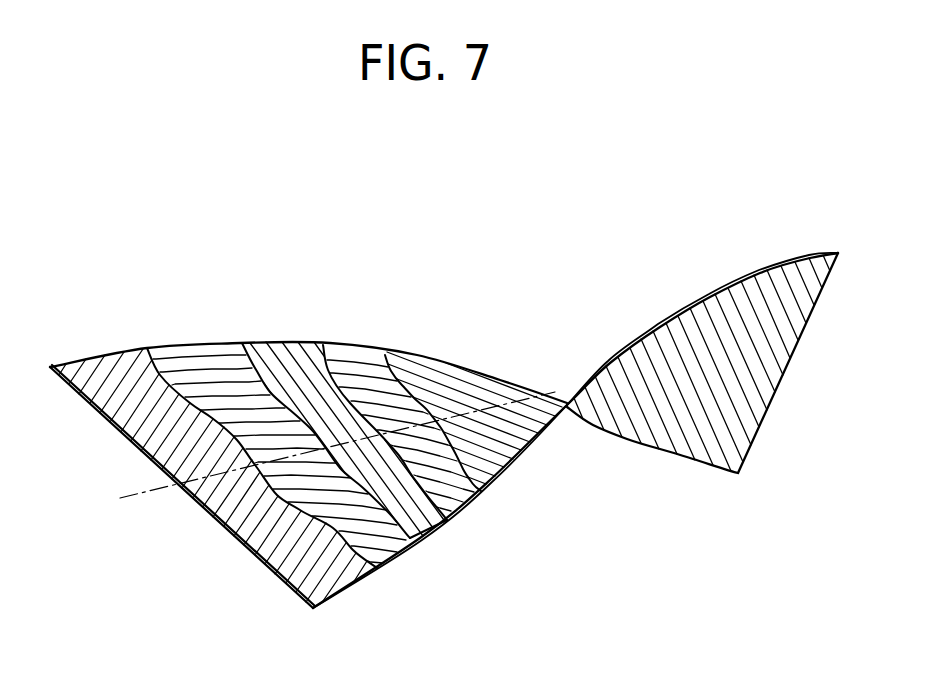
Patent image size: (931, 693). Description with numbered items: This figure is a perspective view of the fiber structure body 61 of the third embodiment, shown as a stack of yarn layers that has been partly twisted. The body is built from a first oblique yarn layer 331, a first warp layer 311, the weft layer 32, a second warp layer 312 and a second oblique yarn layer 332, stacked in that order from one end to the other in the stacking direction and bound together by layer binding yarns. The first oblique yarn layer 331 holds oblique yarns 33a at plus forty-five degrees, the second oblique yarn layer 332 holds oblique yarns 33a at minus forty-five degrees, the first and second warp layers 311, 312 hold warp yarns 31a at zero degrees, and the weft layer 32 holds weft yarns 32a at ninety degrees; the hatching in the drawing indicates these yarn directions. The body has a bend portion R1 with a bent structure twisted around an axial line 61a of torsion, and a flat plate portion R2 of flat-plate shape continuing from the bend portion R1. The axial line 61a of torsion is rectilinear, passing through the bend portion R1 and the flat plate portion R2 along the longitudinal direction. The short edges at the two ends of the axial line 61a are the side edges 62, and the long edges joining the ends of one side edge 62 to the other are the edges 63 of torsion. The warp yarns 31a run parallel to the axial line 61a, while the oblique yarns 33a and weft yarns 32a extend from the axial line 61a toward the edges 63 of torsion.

The second oblique yarn layer 332 is at (88, 357).
The second warp layer 312 is at (182, 343).
The weft layer 32 is at (275, 340).
The first warp layer 311 is at (347, 342).
The first oblique yarn layer 331 is at (421, 350).
The edge of torsion 63 is at (468, 364).
The axial line of torsion 61a is at (503, 400).
The fiber structure body 61 is at (728, 285).
The side edge 62 is at (107, 426).
The oblique yarn 33a is at (527, 448).
The warp yarn 31a is at (471, 505).
The weft yarn 32a is at (437, 532).
The bend portion R1 is at (565, 430).
The flat plate portion R2 is at (240, 553).